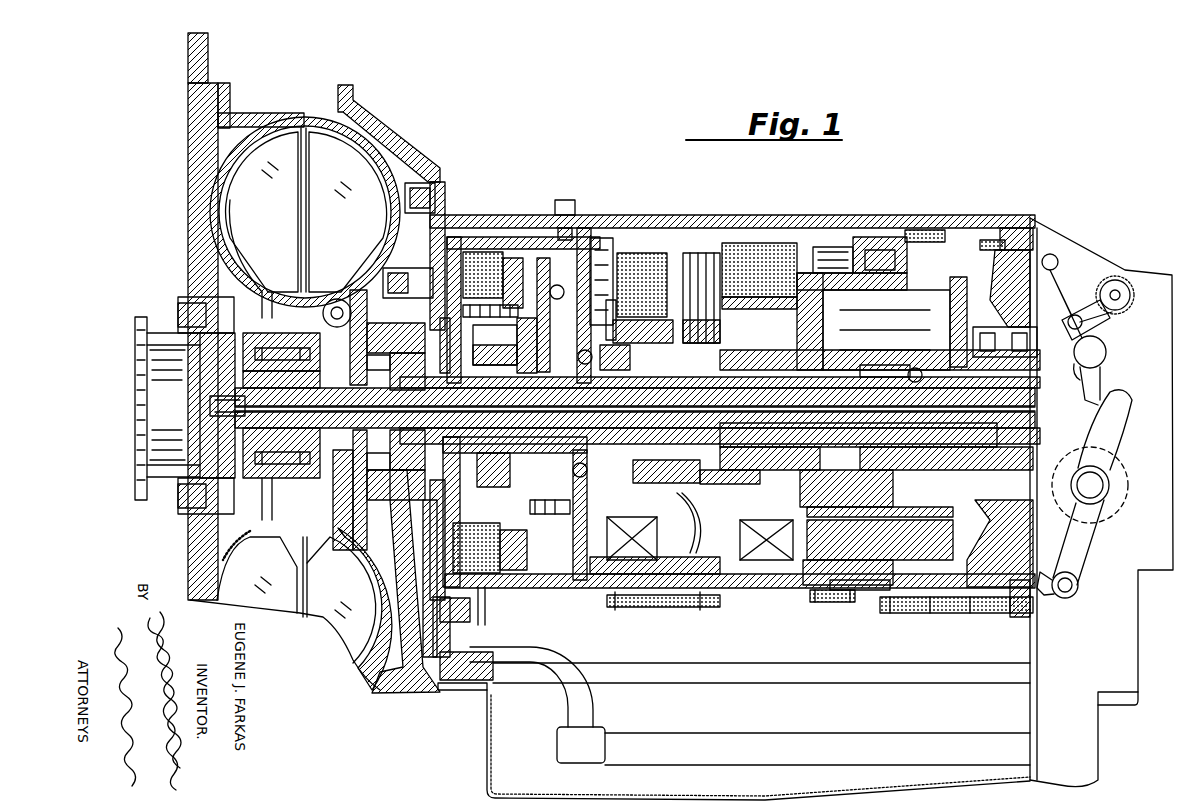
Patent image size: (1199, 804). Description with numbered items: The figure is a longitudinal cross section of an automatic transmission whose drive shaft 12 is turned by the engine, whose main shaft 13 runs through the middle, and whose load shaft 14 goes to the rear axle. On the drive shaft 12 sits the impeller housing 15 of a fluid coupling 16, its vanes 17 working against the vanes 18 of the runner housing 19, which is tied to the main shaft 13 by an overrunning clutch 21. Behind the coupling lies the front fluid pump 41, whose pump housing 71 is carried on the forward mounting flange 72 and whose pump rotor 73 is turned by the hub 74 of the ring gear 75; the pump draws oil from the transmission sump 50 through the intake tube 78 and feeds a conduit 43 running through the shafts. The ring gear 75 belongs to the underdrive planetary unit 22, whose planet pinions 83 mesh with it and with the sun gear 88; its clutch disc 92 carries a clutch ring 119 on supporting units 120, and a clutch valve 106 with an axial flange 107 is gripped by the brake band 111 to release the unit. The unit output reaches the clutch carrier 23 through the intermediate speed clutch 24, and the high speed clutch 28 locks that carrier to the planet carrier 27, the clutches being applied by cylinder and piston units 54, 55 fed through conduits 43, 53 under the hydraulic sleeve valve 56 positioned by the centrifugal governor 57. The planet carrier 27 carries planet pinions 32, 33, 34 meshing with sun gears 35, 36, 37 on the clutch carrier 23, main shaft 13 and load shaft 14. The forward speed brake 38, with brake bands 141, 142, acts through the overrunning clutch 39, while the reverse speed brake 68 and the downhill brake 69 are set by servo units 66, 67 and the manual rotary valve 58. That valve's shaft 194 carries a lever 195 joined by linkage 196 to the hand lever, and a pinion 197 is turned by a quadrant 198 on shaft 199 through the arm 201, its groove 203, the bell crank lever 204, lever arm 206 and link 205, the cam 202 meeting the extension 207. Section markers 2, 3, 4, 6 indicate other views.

The drive shaft 12 is at (134, 404).
The main shaft 13 is at (268, 475).
The load shaft 14 is at (1005, 400).
The impeller housing 15 is at (244, 118).
The fluid coupling 16 is at (252, 178).
The vanes 17 is at (348, 212).
The vanes 18 is at (262, 212).
The runner housing 19 is at (262, 290).
The overrunning clutch 21 is at (204, 362).
The underdrive planetary unit 22 is at (462, 215).
The clutch carrier 23 is at (625, 240).
The intermediate speed clutch 24 is at (660, 245).
The planet carrier 27 is at (890, 240).
The high speed clutch 28 is at (785, 250).
The planet pinions 32 is at (850, 603).
The planet pinions 33 is at (880, 595).
The planet pinions 34 is at (920, 555).
The sun gear 35 is at (848, 365).
The sun gear 36 is at (880, 380).
The sun gear 37 is at (910, 360).
The forward speed brake 38 is at (968, 230).
The overrunning clutch 39 is at (1010, 316).
The front fluid pump 41 is at (408, 270).
The conduit 43 is at (205, 410).
The transmission sump 50 is at (500, 733).
The conduit 53 is at (735, 525).
The cylinder and piston unit 54 is at (700, 250).
The cylinder and piston unit 55 is at (725, 255).
The hydraulic sleeve valve 56 is at (632, 537).
The centrifugal governor 57 is at (697, 530).
The rotary hydraulic valve 58 is at (1128, 480).
The hydraulic servo unit 66 is at (586, 352).
The hydraulic servo unit 67 is at (612, 300).
The reverse speed brake 68 is at (738, 608).
The downhill brake 69 is at (830, 250).
The pump housing 71 is at (400, 322).
The forward mounting flange 72 is at (418, 245).
The pump rotor 73 is at (379, 436).
The hub 74 is at (313, 478).
The ring gear 75 is at (490, 335).
The intake tube 78 is at (560, 652).
The planet pinions 83 is at (396, 465).
The sun gear 88 is at (355, 542).
The clutch disc 92 is at (548, 285).
The clutch valve 106 is at (570, 258).
The axial flange 107 is at (475, 618).
The brake band 111 is at (481, 592).
The clutch ring 119 is at (563, 583).
The supporting units 120 is at (543, 582).
The brake band 141 is at (912, 228).
The brake band 142 is at (1010, 235).
The shaft 194 is at (1103, 487).
The lever 195 is at (1083, 535).
The linkage 196 is at (1058, 553).
The pinion 197 is at (1131, 281).
The quadrant 198 is at (1112, 315).
The shaft 199 is at (1077, 352).
The arm 201 is at (1072, 366).
The cam 202 is at (1093, 405).
The groove 203 is at (1068, 322).
The bell crank lever 204 is at (1070, 275).
The link 205 is at (1055, 255).
The lever arm 206 is at (1098, 300).
The extension 207 is at (1127, 405).
The section line 2 is at (448, 546).
The section line 3 is at (526, 200).
The section line 4 is at (448, 263).
The section line 6 is at (966, 203).